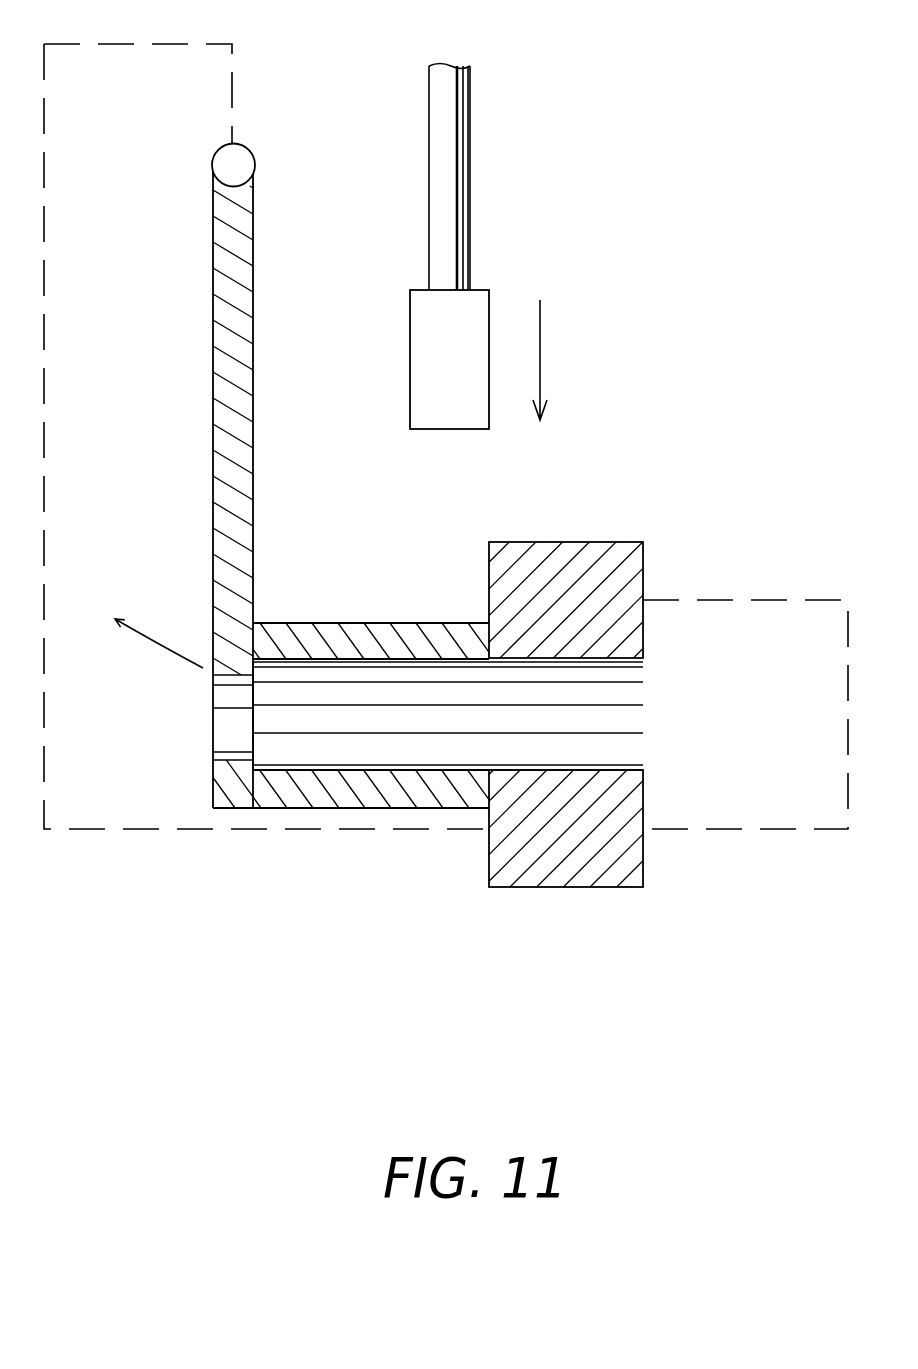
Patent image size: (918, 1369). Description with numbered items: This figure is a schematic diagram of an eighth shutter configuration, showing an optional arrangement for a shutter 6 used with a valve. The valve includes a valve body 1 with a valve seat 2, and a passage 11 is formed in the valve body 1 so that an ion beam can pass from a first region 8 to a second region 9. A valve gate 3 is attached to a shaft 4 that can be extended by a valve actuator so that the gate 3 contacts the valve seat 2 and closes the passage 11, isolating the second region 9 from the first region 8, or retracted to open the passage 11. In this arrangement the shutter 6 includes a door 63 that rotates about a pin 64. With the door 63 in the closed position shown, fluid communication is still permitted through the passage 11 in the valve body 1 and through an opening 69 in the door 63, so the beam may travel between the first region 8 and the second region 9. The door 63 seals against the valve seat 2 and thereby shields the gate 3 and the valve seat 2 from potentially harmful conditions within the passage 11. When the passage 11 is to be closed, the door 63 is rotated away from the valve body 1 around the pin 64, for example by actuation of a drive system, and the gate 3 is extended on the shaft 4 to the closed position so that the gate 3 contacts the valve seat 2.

The valve body 1 is at (632, 888).
The valve seat 2 is at (488, 570).
The valve gate 3 is at (410, 407).
The shaft 4 is at (470, 178).
The shutter 6 is at (296, 491).
The first region 8 is at (170, 829).
The second region 9 is at (780, 829).
The passage 11 is at (590, 661).
The door 63 is at (400, 810).
The pin 64 is at (249, 150).
The opening 69 is at (228, 757).